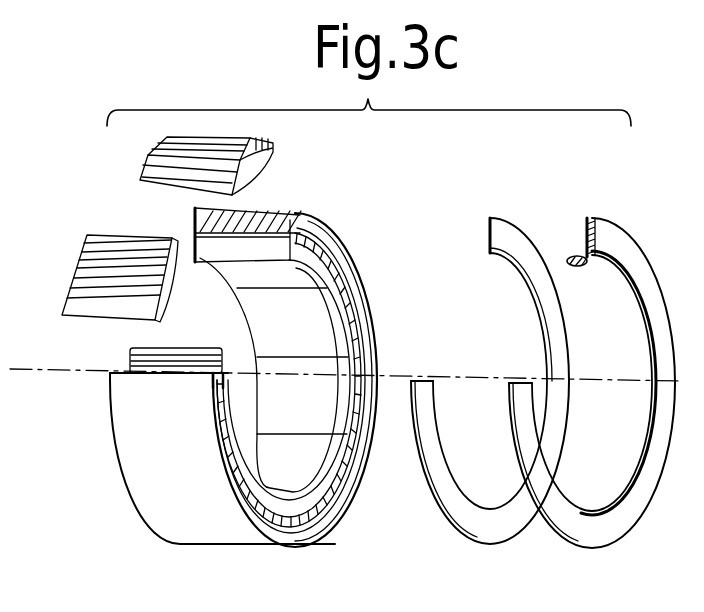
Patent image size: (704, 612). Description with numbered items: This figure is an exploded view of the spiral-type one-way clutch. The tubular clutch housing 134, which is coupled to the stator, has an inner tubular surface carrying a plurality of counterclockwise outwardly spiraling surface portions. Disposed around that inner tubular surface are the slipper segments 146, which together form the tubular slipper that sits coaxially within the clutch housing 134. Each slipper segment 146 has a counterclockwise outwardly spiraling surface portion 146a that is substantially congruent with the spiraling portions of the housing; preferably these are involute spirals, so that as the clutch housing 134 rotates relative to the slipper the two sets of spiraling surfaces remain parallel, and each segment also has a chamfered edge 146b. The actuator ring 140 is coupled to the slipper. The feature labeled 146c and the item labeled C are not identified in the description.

The clutch housing 134 is at (137, 403).
The actuator ring 140 is at (620, 253).
The slipper segments 146 is at (240, 248).
The counterclockwise outwardly spiraling surface portions 146a is at (163, 185).
The chamfered edges 146b is at (313, 273).
The third insert layer 146c is at (103, 310).
The clearance gap C is at (570, 260).